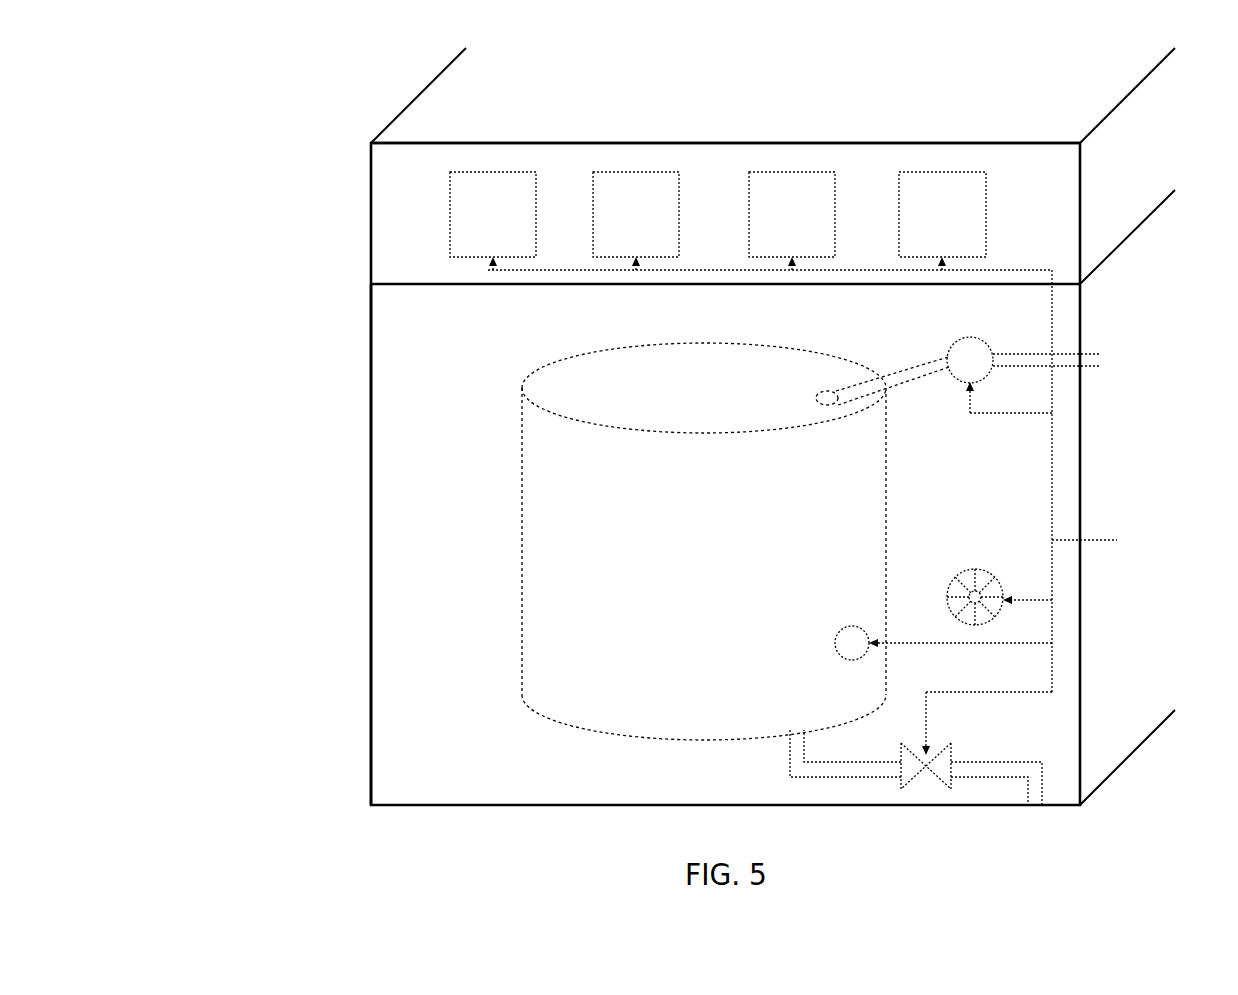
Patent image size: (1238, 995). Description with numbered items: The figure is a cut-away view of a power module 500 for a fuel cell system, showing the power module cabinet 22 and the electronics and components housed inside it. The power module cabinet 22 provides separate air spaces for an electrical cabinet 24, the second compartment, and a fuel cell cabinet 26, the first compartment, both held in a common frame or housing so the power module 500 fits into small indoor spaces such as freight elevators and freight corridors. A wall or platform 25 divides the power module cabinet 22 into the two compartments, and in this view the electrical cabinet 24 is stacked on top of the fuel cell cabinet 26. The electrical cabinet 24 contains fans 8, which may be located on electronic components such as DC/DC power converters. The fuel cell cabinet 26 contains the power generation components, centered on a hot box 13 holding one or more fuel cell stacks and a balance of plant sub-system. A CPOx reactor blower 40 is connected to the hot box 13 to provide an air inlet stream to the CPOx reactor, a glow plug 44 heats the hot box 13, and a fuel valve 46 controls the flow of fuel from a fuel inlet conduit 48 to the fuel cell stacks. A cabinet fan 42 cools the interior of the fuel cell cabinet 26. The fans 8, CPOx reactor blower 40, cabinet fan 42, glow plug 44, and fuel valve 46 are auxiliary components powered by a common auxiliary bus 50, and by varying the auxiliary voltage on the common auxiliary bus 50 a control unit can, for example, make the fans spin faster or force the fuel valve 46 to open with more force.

The power module 500 is at (249, 160).
The power module cabinet 22 is at (1125, 102).
The electrical cabinet 24 is at (371, 205).
The wall or platform 25 is at (371, 282).
The fuel cell cabinet 26 is at (371, 543).
The fans 8 is at (718, 214).
The hot box 13 is at (555, 372).
The CPOx reactor blower 40 is at (955, 343).
The cabinet fan 42 is at (987, 570).
The glow plug 44 is at (840, 626).
The fuel valve 46 is at (900, 757).
The fuel inlet conduit 48 is at (985, 762).
The common auxiliary bus 50 is at (1100, 540).